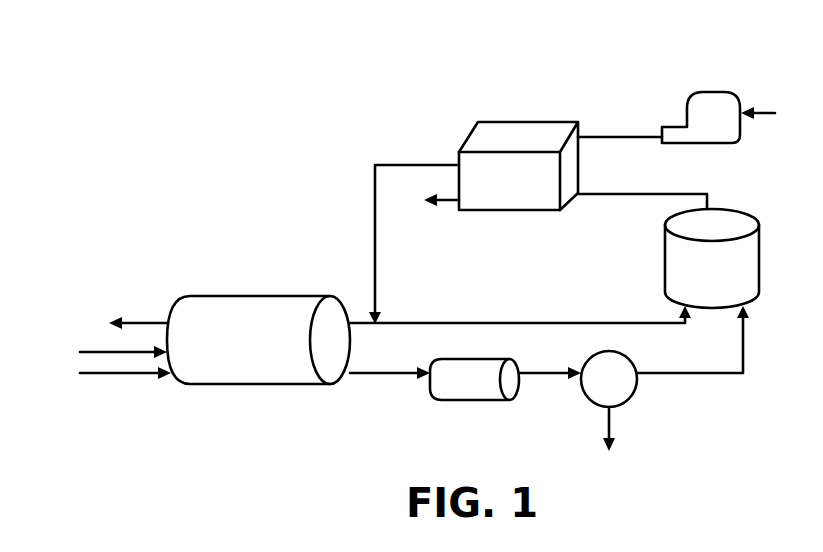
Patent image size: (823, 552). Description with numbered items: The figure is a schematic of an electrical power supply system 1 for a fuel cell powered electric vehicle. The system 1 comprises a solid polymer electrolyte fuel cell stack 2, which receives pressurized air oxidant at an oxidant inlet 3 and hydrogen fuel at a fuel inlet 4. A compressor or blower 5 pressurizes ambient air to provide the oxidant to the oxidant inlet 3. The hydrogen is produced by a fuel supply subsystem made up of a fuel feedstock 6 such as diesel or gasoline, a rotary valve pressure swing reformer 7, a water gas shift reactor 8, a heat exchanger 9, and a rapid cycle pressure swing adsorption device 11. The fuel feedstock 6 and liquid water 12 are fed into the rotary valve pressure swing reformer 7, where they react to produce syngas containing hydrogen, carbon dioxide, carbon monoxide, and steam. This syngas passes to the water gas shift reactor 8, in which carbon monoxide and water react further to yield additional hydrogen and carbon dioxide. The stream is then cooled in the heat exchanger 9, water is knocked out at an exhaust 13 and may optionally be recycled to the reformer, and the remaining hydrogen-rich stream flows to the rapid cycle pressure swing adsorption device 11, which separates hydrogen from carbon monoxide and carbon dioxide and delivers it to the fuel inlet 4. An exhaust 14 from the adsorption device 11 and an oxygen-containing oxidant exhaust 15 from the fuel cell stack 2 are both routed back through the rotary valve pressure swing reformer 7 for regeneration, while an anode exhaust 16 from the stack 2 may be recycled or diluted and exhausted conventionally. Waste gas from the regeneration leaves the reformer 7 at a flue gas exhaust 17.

The electrical power supply system 1 is at (699, 57).
The solid polymer electrolyte fuel cell stack 2 is at (491, 121).
The oxidant inlet 3 is at (593, 136).
The fuel inlet 4 is at (619, 195).
The compressor or blower 5 is at (741, 128).
The fuel feedstock 6 is at (88, 374).
The rotary valve pressure swing reformer 7 is at (255, 385).
The water gas shift reactor 8 is at (462, 401).
The heat exchanger 9 is at (590, 401).
The rapid cycle pressure swing adsorption device 11 is at (761, 257).
The liquid water 12 is at (93, 352).
The exhaust 13 is at (611, 421).
The exhaust 14 is at (650, 323).
The oxidant exhaust 15 is at (418, 166).
The anode exhaust 16 is at (445, 201).
The flue gas exhaust 17 is at (131, 323).